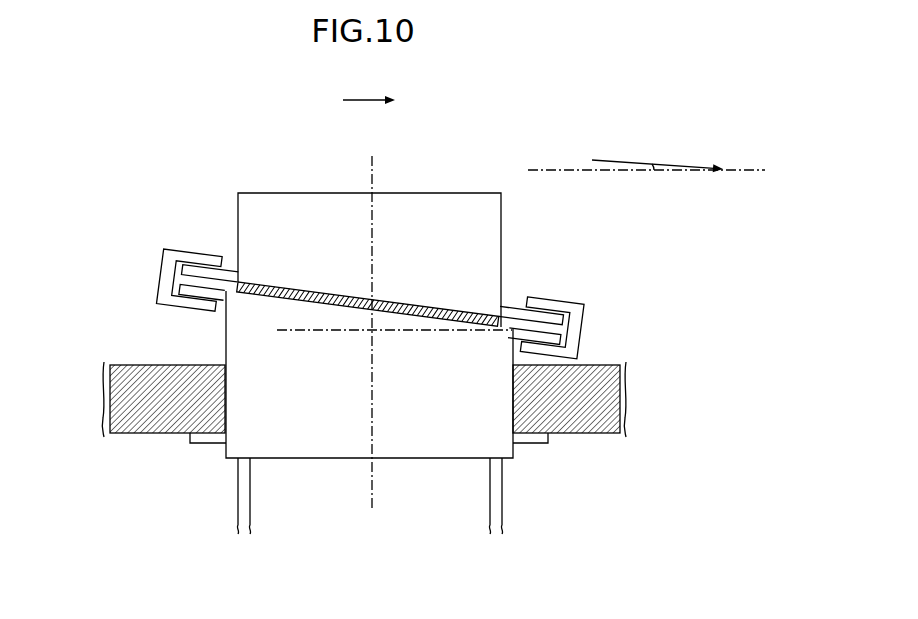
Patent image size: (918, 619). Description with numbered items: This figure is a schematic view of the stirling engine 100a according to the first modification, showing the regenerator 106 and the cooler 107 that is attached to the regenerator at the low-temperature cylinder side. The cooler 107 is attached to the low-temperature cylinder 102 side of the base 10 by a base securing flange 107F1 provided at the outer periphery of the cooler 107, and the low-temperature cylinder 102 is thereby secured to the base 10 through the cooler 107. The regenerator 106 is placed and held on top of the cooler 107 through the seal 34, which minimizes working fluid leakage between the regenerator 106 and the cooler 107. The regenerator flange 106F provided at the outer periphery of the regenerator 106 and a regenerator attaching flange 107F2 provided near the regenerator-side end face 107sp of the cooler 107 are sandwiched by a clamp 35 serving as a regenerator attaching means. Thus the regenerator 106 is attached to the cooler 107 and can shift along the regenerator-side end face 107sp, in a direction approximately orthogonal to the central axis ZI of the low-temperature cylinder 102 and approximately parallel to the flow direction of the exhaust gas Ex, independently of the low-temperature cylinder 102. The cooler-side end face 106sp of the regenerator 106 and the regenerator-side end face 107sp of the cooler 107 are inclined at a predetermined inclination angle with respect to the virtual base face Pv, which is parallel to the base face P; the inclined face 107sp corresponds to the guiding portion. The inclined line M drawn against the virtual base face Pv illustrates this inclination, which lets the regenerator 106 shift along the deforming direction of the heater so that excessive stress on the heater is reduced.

The stirling engine 100a is at (124, 137).
The seal 34 is at (289, 283).
The regenerator 106 is at (331, 207).
The regenerator flange 106F is at (540, 315).
The cooler-side end face 106sp is at (345, 330).
The cooler 107 is at (438, 456).
The base securing flange 107F1 is at (192, 438).
The regenerator attaching flange 107F2 is at (192, 291).
The regenerator-side end face 107sp is at (452, 316).
The clamp 35 is at (162, 274).
The low-temperature cylinder 102 is at (238, 500).
The base 10 is at (598, 446).
The base face P is at (127, 359).
The exhaust gas Ex is at (380, 102).
The central axis ZI is at (372, 321).
The virtual base face Pv is at (550, 180).
The inclined line M is at (626, 158).